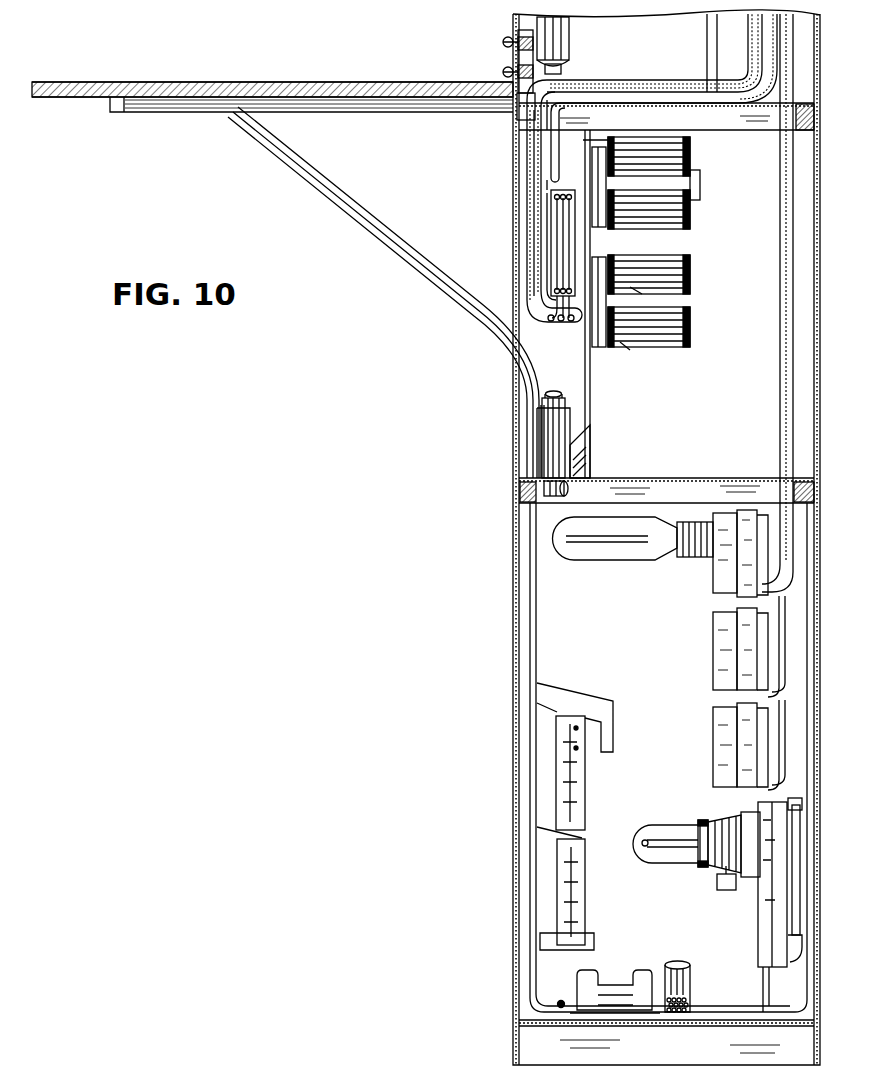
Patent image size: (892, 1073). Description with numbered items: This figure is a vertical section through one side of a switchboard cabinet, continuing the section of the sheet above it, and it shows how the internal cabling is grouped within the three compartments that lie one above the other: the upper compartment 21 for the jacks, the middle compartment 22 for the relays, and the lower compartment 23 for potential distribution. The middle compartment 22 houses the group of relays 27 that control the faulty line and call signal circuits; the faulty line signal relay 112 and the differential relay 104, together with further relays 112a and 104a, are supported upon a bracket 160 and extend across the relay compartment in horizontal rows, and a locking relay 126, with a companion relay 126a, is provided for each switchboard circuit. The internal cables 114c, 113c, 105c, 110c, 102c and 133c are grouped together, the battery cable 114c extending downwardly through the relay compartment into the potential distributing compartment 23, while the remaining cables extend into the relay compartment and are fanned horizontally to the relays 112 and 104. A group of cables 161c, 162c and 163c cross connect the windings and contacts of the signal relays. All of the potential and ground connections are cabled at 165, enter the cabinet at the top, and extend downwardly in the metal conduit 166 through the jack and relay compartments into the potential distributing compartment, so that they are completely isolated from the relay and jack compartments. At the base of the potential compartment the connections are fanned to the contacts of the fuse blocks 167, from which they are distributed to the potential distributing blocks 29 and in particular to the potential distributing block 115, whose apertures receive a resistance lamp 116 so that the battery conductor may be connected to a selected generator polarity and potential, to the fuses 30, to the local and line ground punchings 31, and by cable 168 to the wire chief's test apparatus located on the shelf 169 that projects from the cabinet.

The upper compartment 21 is at (518, 48).
The middle compartment 22 is at (603, 423).
The lower compartment 23 is at (548, 645).
The relays 27 is at (691, 268).
The potential distributing blocks 29 is at (713, 648).
The fuses 30 is at (610, 978).
The ground punchings 31 is at (589, 848).
The internal cable 102c is at (547, 227).
The differential relay 104 is at (690, 281).
The coil 104a is at (692, 326).
The internal cable 105c is at (533, 182).
The internal cable 110c is at (538, 203).
The faulty line signal relay 112 is at (690, 143).
The coil 112a is at (693, 207).
The internal cable 113c is at (550, 130).
The battery cable 114c is at (782, 443).
The potential distributing block 115 is at (714, 573).
The resistance lamp 116 is at (610, 553).
The locking relay 126 is at (636, 289).
The coil lead 126a is at (623, 350).
The internal cable 133c is at (558, 152).
The bracket 160 is at (592, 457).
The cross-connecting cable 161c is at (557, 247).
The cross-connecting cable 162c is at (563, 267).
The cross-connecting cable 163c is at (570, 280).
The potential and ground cable 165 is at (567, 488).
The metal conduit 166 is at (557, 31).
The fuse blocks 167 is at (588, 994).
The cable 168 is at (530, 748).
The shelf 169 is at (127, 111).